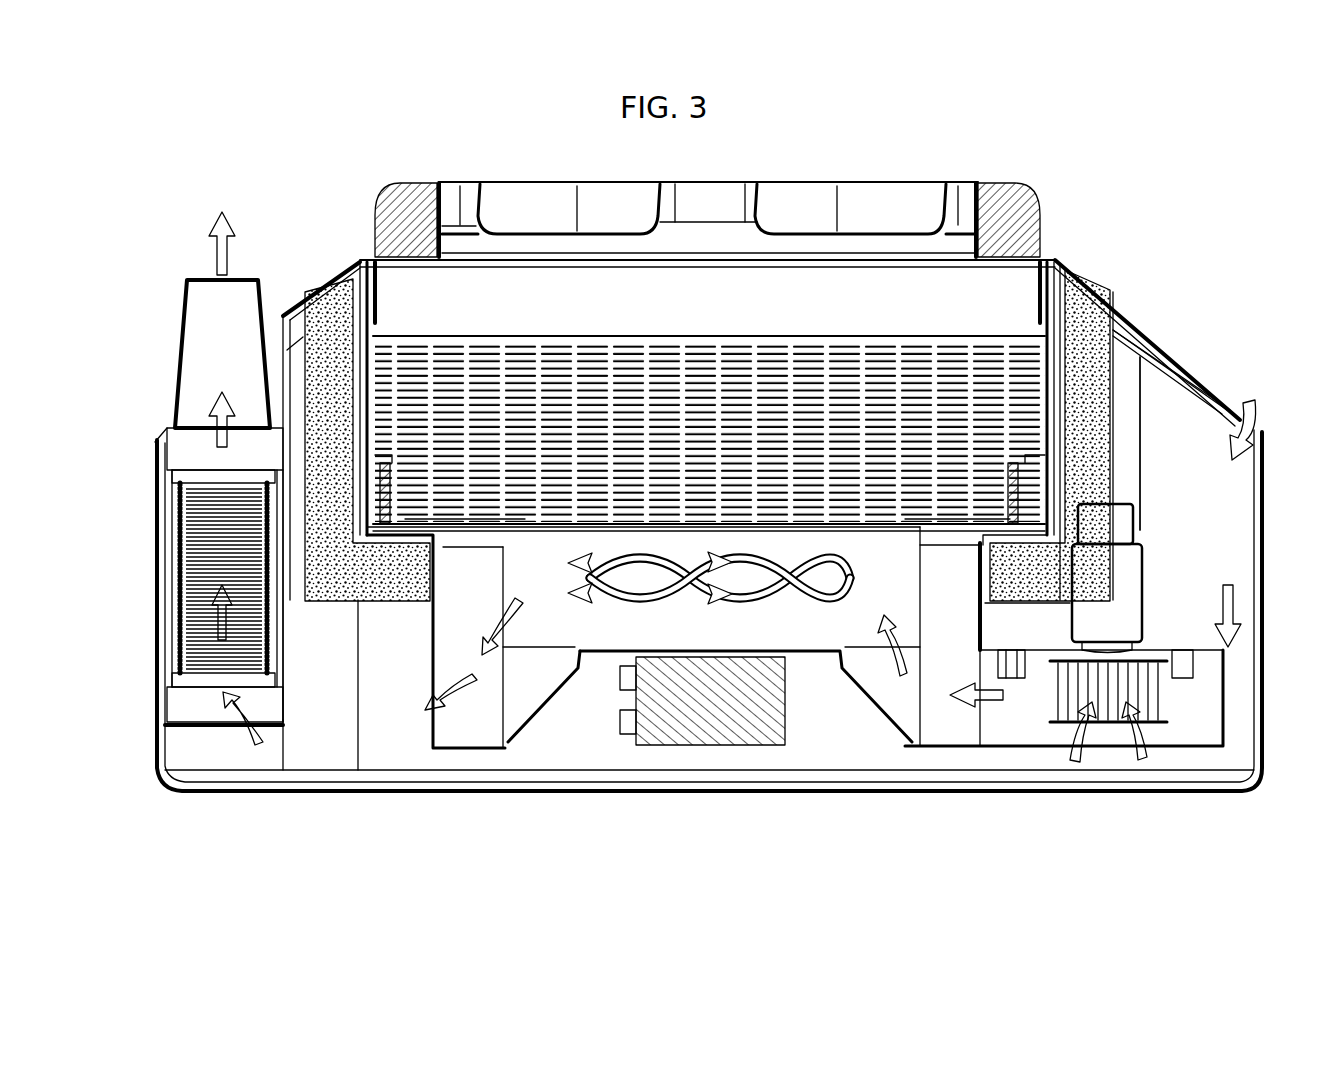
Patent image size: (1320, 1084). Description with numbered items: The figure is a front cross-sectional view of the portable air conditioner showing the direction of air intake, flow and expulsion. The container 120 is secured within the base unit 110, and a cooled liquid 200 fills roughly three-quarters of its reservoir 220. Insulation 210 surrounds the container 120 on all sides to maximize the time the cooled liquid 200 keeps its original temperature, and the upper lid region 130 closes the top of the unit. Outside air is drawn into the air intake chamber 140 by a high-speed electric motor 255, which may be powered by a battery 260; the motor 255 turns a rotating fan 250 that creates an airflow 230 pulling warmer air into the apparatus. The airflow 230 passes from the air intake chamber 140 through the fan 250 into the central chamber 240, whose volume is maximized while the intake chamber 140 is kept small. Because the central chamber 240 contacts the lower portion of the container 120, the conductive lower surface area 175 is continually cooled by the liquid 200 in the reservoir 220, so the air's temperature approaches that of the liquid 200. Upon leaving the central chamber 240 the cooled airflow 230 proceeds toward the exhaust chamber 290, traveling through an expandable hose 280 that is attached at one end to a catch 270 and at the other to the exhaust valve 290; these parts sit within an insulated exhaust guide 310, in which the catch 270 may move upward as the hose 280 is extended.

The base unit 110 is at (440, 822).
The container 120 is at (428, 160).
The lid top surface 130 is at (890, 178).
The air intake chamber 140 is at (1187, 430).
The lower surface area 175 is at (553, 527).
The cooled liquid 200 is at (975, 370).
The insulation 210 is at (330, 290).
The reservoir 220 is at (428, 312).
The airflow 230 is at (1250, 418).
The central chamber 240 is at (643, 595).
The rotating fan 250 is at (1105, 728).
The high-speed electric motor 255 is at (1080, 622).
The battery 260 is at (708, 746).
The catch 270 is at (202, 715).
The expandable hose 280 is at (173, 620).
The exhaust chamber 290 is at (180, 325).
The insulated exhaust guide 310 is at (175, 560).